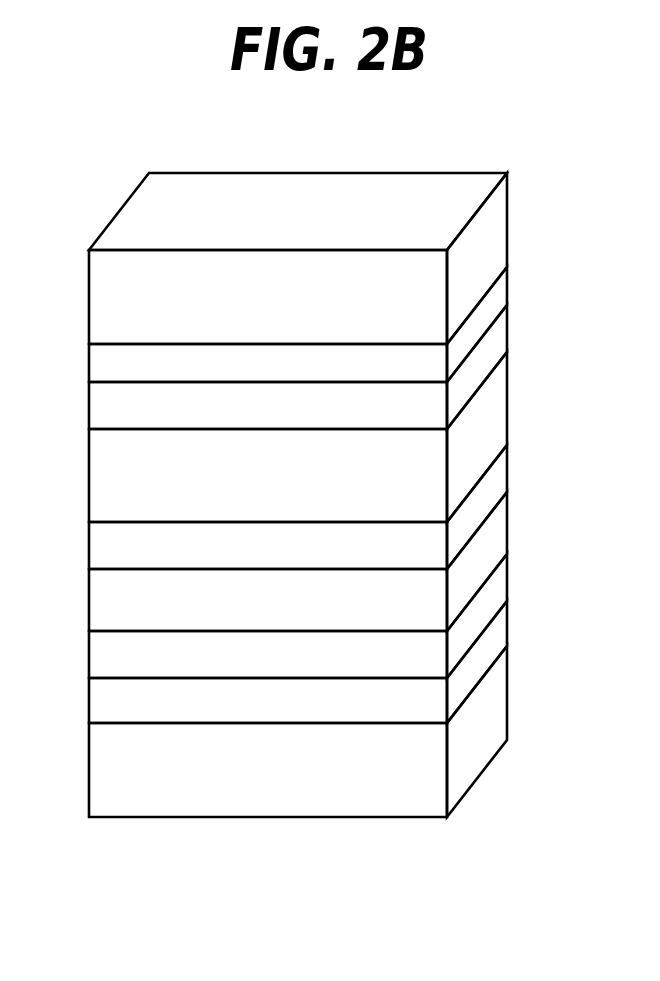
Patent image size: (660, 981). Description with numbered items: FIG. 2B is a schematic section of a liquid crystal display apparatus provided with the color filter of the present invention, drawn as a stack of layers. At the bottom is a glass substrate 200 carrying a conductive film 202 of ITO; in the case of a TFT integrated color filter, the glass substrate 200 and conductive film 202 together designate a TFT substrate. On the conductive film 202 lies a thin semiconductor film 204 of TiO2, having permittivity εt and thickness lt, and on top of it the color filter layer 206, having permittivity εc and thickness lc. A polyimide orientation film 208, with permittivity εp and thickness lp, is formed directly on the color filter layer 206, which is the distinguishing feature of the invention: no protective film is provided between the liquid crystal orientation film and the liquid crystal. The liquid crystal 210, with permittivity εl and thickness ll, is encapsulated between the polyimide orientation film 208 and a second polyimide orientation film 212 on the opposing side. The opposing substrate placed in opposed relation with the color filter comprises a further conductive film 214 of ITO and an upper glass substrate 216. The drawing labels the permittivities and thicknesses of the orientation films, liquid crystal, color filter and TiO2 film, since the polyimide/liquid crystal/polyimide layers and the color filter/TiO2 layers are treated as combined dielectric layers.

The glass substrate 200 is at (500, 697).
The conductive film (ITO) 202 is at (500, 630).
The thin semiconductor film (TiO2) 204 is at (500, 582).
The color filter layer 206 is at (500, 528).
The polyimide orientation film 208 is at (500, 472).
The liquid crystal 210 is at (500, 407).
The polyimide orientation film 212 is at (500, 337).
The conductive film (ITO) 214 is at (500, 295).
The glass substrate 216 is at (500, 229).